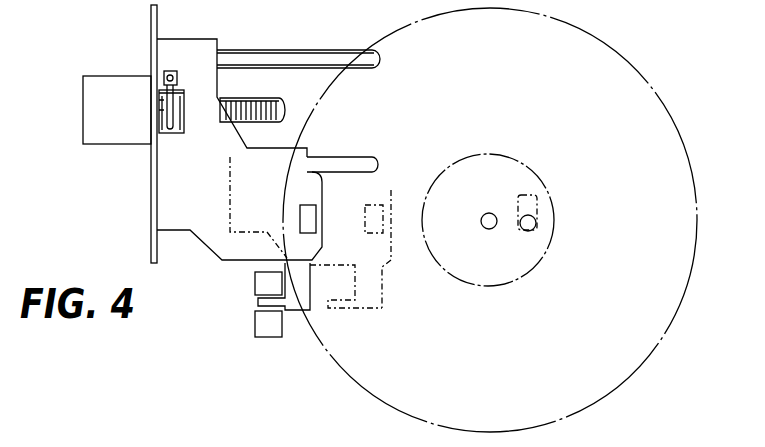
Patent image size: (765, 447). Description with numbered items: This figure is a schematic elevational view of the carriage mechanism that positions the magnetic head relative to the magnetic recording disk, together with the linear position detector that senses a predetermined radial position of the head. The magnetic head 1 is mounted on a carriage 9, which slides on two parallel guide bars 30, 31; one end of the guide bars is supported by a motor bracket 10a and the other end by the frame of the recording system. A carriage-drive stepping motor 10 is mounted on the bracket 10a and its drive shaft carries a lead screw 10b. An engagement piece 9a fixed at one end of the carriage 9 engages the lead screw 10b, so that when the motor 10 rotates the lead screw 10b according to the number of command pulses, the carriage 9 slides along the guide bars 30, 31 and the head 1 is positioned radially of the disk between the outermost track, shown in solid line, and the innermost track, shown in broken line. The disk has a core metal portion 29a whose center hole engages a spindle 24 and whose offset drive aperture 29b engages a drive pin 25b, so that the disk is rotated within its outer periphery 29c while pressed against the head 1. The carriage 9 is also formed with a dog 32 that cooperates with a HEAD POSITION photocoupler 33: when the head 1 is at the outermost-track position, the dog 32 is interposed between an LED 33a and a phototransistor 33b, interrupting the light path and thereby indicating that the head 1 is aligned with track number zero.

The magnetic head 1 is at (311, 220).
The carriage 9 is at (177, 222).
The engagement piece 9a is at (172, 72).
The carriage-drive stepping motor 10 is at (103, 134).
The motor bracket 10a is at (153, 33).
The lead screw 10b is at (257, 100).
The spindle 24 is at (488, 229).
The drive pin 25b is at (522, 224).
The core metal portion 29a is at (492, 290).
The drive aperture 29b is at (517, 194).
The outer periphery of the magnetic disk 29c is at (368, 392).
The guide bar 30 is at (306, 58).
The guide bar 31 is at (348, 158).
The dog 32 is at (292, 300).
The HEAD POSITION photocoupler 33 is at (237, 336).
The LED 33a is at (257, 308).
The phototransistor 33b is at (258, 299).